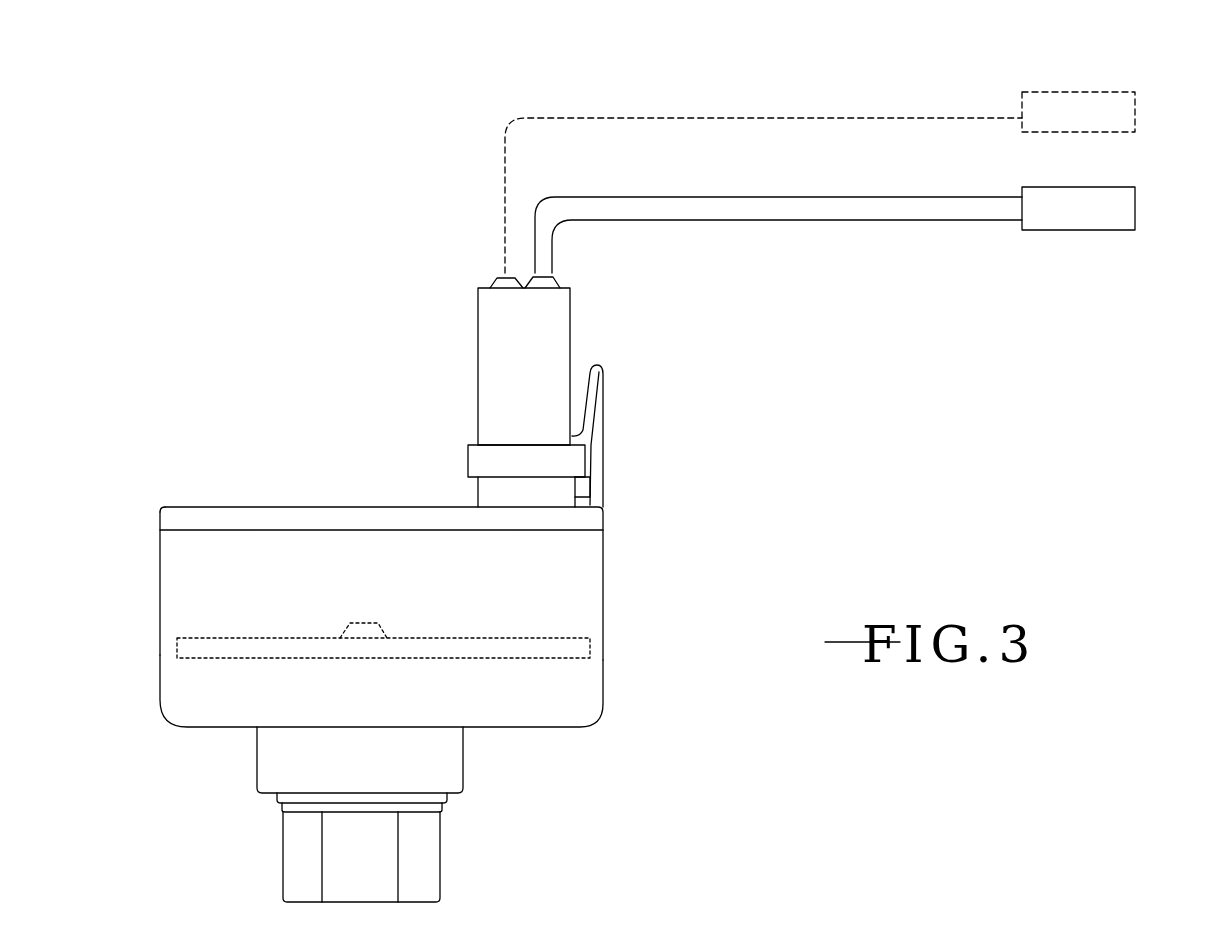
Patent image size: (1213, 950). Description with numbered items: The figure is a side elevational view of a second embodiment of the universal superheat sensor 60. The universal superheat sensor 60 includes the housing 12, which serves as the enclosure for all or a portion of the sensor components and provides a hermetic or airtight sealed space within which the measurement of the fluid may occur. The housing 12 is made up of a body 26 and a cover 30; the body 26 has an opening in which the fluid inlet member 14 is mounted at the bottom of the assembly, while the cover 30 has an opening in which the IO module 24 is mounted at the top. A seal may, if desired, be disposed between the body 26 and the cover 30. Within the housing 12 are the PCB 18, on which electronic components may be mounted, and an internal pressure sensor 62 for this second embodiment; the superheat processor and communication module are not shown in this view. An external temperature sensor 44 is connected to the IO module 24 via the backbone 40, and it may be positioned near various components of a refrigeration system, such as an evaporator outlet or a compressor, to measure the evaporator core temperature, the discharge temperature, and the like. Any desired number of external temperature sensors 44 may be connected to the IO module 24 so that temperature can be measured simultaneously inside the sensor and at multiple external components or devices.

The universal superheat sensor 60 is at (136, 497).
The housing 12 is at (158, 677).
The cover 30 is at (238, 523).
The body 26 is at (572, 710).
The printed circuit board 18 is at (590, 643).
The internal pressure sensor 62 is at (363, 623).
The fluid inlet member 14 is at (297, 855).
The IO module 24 is at (490, 332).
The backbone 40 is at (785, 197).
The external temperature sensor 44 is at (1123, 107).